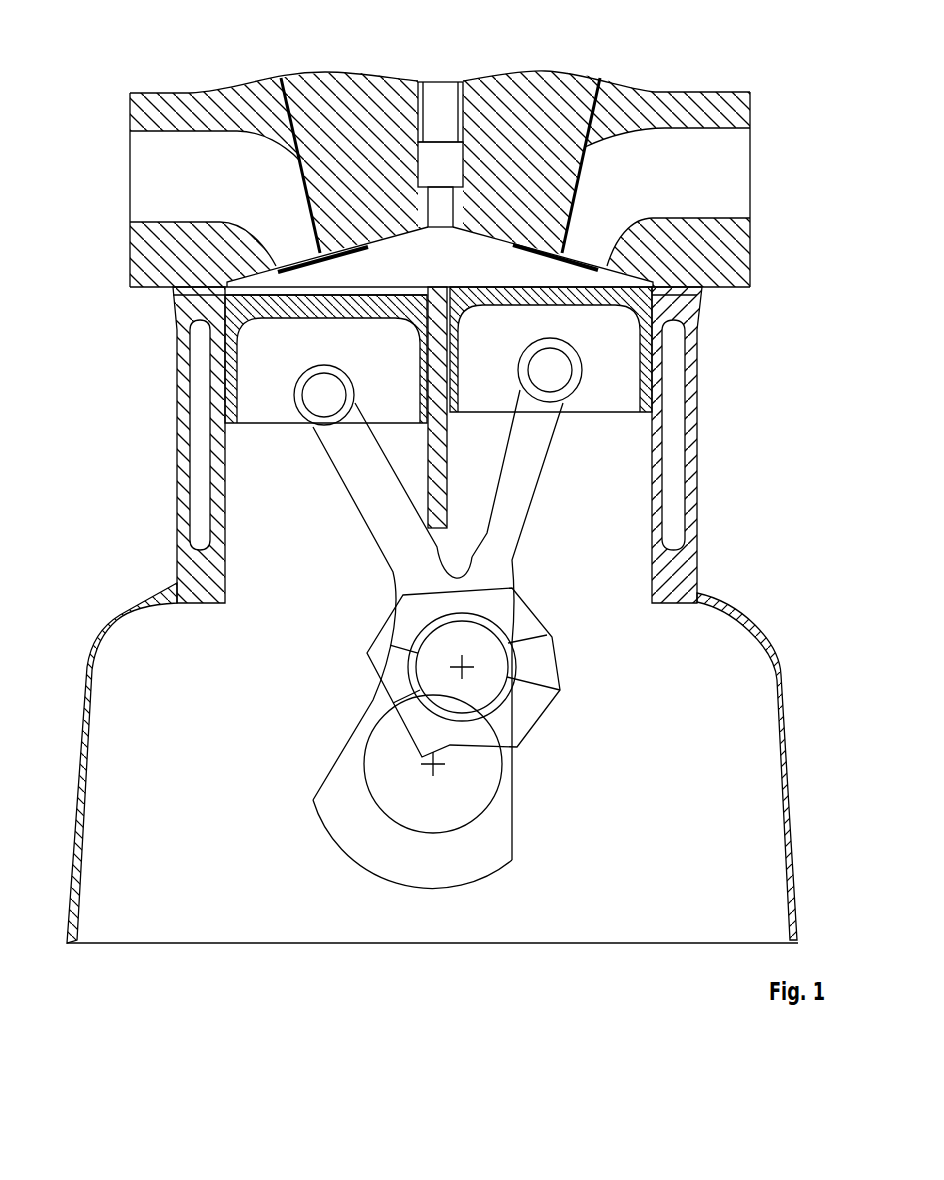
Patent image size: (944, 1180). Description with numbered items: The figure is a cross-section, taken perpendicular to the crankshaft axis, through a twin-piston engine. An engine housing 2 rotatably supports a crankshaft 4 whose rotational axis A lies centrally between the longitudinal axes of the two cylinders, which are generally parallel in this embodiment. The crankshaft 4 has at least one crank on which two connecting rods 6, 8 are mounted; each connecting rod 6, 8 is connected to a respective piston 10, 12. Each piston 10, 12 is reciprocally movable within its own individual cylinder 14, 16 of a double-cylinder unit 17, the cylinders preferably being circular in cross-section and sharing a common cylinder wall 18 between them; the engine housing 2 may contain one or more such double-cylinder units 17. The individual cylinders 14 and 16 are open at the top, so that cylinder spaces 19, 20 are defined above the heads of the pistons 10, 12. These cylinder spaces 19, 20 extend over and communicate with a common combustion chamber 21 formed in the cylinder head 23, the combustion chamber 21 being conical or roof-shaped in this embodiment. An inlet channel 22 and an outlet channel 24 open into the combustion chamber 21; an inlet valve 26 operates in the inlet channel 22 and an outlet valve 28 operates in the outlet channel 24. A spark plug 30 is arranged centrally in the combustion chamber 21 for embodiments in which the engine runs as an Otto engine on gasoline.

The engine housing 2 is at (677, 585).
The crankshaft 4 is at (513, 825).
The connecting rod 6 is at (512, 557).
The connecting rod 8 is at (393, 572).
The piston 10 is at (627, 355).
The piston 12 is at (253, 375).
The individual cylinder 14 is at (602, 436).
The individual cylinder 16 is at (277, 471).
The double-cylinder unit 17 is at (713, 520).
The common cylinder wall 18 is at (438, 520).
The cylinder space 19 is at (607, 265).
The cylinder space 20 is at (225, 295).
The common combustion chamber 21 is at (425, 268).
The inlet channel 22 is at (153, 173).
The cylinder head 23 is at (653, 92).
The outlet channel 24 is at (698, 187).
The inlet valve 26 is at (281, 78).
The outlet valve 28 is at (598, 80).
The spark plug 30 is at (445, 102).
The rotational axis A is at (430, 765).